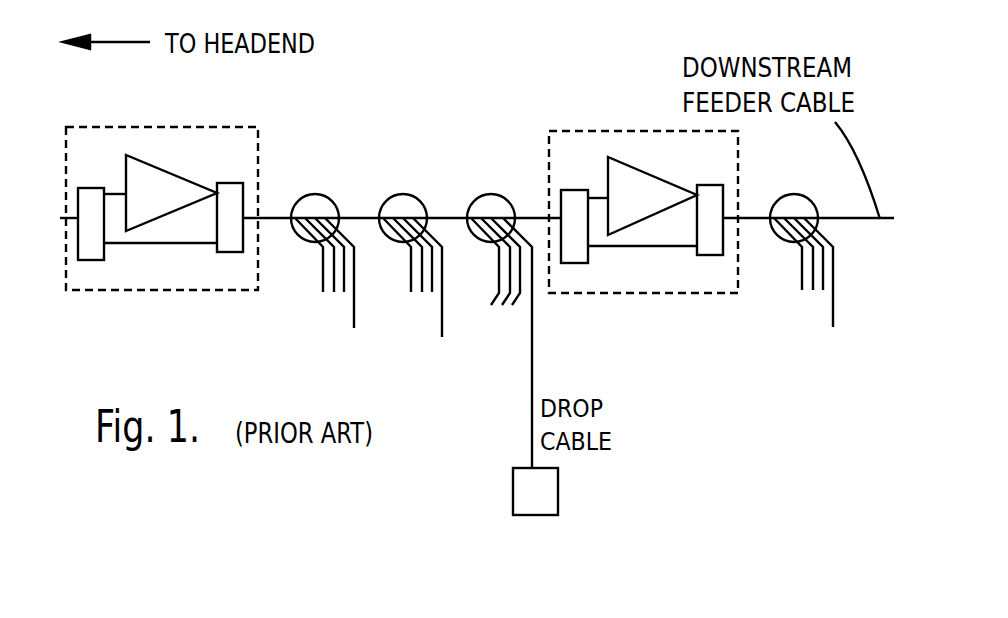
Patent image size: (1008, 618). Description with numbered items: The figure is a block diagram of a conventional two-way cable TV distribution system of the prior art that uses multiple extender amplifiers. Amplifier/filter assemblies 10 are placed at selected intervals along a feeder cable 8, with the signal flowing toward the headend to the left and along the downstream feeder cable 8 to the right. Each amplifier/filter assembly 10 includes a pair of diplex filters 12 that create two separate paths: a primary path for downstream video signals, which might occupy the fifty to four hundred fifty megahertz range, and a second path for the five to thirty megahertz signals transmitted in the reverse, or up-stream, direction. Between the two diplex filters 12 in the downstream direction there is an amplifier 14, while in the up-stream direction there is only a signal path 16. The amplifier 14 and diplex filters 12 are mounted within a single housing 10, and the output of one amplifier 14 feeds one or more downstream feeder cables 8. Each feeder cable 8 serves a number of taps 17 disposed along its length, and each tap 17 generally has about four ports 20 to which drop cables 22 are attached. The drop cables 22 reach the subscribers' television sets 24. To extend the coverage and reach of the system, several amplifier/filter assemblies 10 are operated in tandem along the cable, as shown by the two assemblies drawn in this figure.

The feeder cable 8 is at (63, 216).
The amplifier/filter assembly 10 is at (232, 127).
The diplex filter 12 is at (93, 260).
The amplifier 14 is at (162, 173).
The signal path 16 is at (192, 245).
The tap 17 is at (483, 200).
The port 20 is at (564, 277).
The drop cable 22 is at (533, 385).
The television set 24 is at (560, 492).